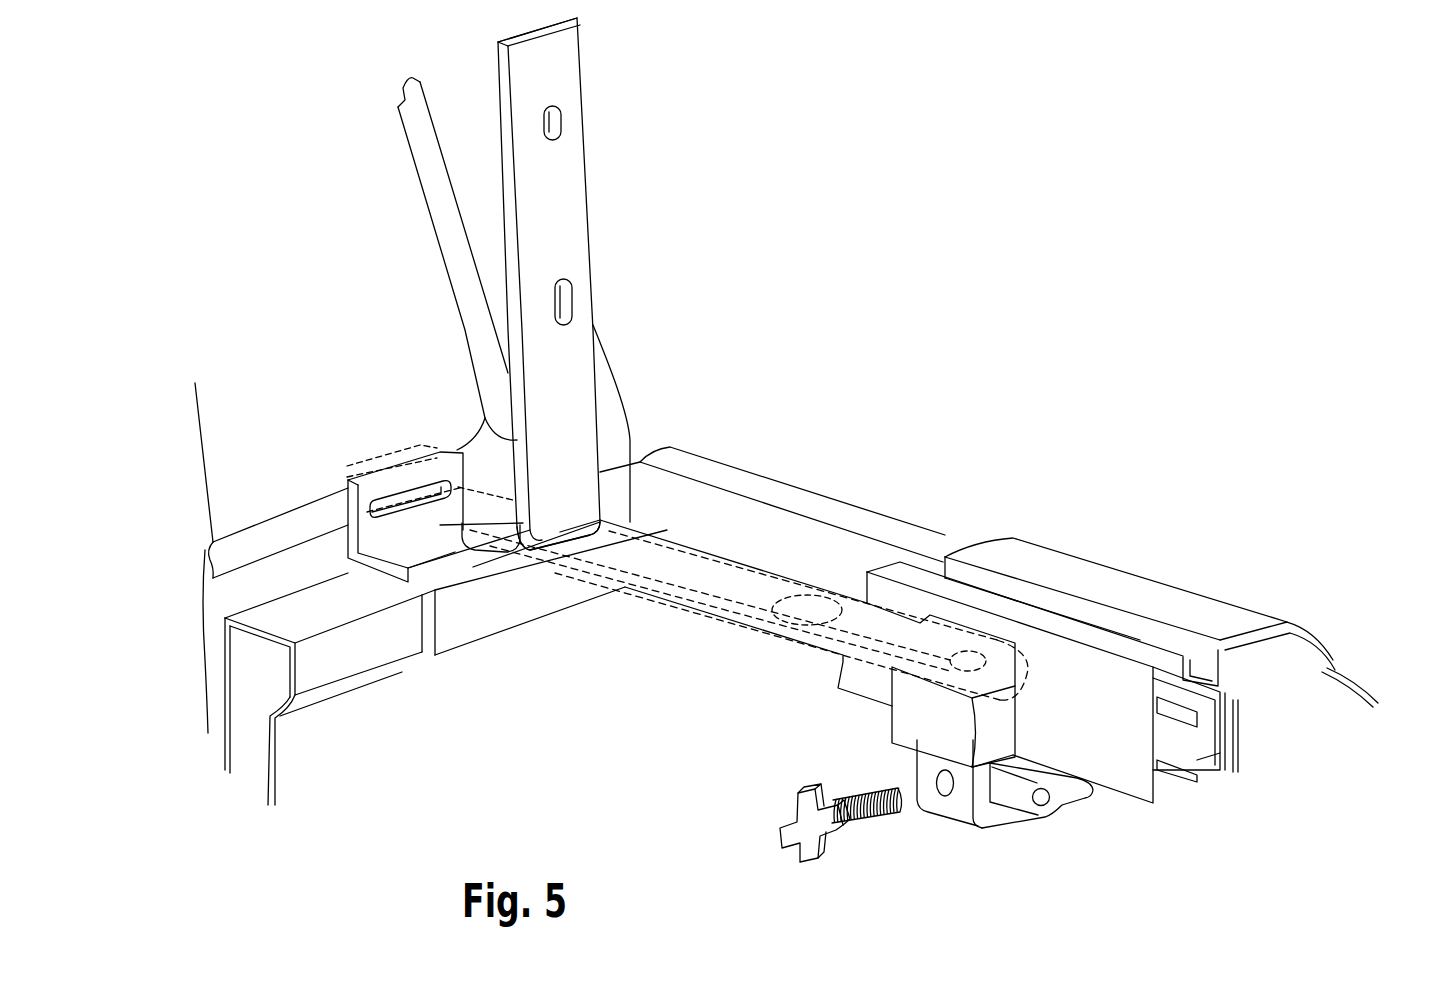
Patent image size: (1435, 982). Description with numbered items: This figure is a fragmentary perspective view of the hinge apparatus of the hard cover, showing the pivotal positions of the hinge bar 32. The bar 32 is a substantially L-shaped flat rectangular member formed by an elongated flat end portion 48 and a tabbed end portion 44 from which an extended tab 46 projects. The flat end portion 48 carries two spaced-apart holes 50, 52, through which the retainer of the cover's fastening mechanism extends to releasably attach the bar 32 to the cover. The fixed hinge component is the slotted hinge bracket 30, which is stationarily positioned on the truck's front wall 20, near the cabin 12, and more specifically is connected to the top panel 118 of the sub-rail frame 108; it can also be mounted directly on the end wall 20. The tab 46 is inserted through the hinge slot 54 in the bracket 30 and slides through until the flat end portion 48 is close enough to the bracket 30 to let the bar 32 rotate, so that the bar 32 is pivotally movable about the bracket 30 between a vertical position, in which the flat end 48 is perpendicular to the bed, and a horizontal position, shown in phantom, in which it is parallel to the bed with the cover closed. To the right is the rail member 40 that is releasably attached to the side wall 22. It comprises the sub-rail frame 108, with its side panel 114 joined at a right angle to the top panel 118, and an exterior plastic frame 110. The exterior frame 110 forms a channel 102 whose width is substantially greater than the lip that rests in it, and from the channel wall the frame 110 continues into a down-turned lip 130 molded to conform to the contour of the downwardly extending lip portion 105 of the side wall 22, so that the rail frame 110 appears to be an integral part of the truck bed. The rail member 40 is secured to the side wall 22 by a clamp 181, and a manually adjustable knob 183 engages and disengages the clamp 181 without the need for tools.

The cabin 12 is at (442, 231).
The front wall 20 is at (278, 756).
The side wall 22 is at (1242, 753).
The hinge bracket 30 is at (385, 500).
The hinge bar 32 is at (592, 284).
The rail member 40 is at (950, 625).
The tabbed end portion 44 is at (585, 501).
The tab 46 is at (495, 515).
The elongated flat end portion 48 is at (567, 53).
The hole 50 is at (562, 128).
The hole 52 is at (569, 315).
The slot 54 is at (392, 494).
The channel 102 is at (1213, 657).
The lip portion 105 is at (1370, 687).
The sub-rail frame 108 is at (785, 650).
The exterior frame 110 is at (1232, 613).
The side panel 114 is at (485, 620).
The top panel 118 is at (473, 567).
The down turned lip 130 is at (1310, 648).
The clamp 181 is at (958, 802).
The manually adjustable knob 183 is at (780, 822).